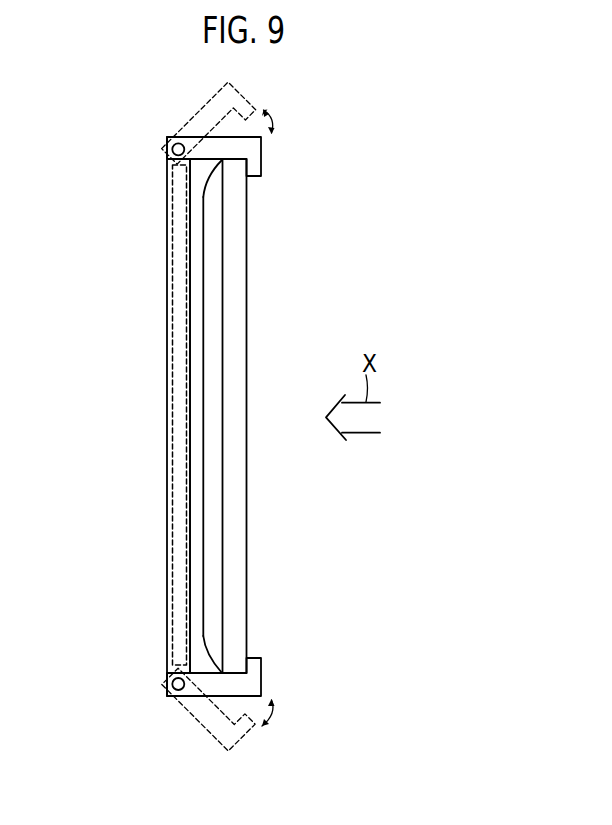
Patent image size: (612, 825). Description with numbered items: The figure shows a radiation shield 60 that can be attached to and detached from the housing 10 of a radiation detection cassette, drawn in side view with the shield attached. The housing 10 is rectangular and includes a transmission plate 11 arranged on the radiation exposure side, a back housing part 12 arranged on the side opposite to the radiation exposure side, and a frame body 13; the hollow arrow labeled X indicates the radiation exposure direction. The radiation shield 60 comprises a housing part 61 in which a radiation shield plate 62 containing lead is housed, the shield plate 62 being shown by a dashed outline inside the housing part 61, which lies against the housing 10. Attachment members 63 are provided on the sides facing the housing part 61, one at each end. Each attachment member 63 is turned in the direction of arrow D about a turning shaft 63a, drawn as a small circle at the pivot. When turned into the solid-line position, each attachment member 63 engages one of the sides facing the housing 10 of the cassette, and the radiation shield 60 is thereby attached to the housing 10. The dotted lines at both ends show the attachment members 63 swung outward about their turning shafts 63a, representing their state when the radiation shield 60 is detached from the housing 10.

The housing 10 is at (253, 416).
The transmission plate 11 is at (246, 538).
The back housing part 12 is at (213, 223).
The frame body 13 is at (233, 587).
The radiation shield 60 is at (208, 419).
The housing part 61 is at (167, 243).
The radiation shield plate 62 is at (169, 195).
The attachment member 63 is at (255, 158).
The turning shaft 63a is at (177, 142).